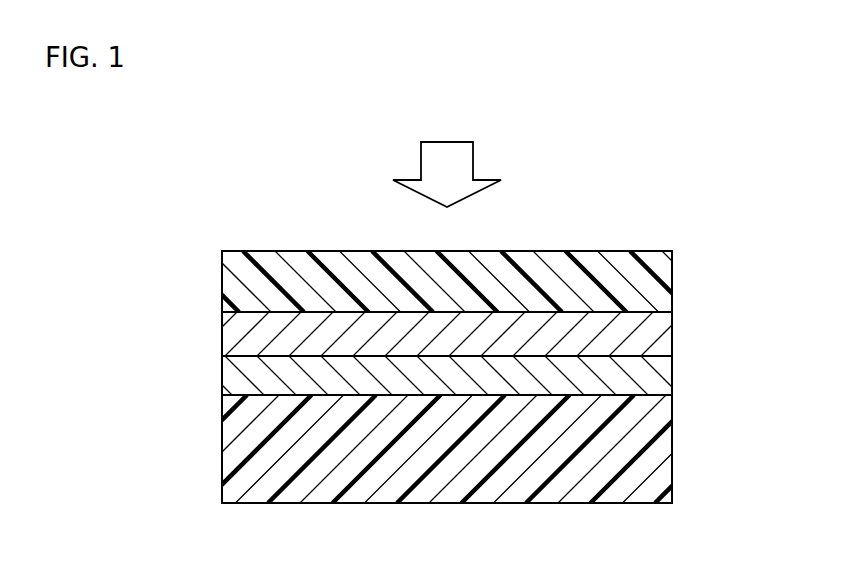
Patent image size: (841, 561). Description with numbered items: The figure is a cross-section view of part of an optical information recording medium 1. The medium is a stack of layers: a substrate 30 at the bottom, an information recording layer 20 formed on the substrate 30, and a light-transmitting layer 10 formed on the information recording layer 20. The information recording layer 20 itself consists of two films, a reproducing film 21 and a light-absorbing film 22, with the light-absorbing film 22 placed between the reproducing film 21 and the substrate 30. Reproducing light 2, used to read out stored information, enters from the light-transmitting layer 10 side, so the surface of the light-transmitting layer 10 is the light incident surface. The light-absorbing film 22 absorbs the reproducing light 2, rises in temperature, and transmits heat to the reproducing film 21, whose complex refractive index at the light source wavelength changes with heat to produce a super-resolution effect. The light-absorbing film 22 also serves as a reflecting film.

The optical information recording medium 1 is at (213, 251).
The reproducing light 2 is at (447, 157).
The light-transmitting layer 10 is at (663, 282).
The information recording layer 20 is at (485, 353).
The reproducing film 21 is at (663, 340).
The light-absorbing film 22 is at (457, 375).
The substrate 30 is at (663, 450).